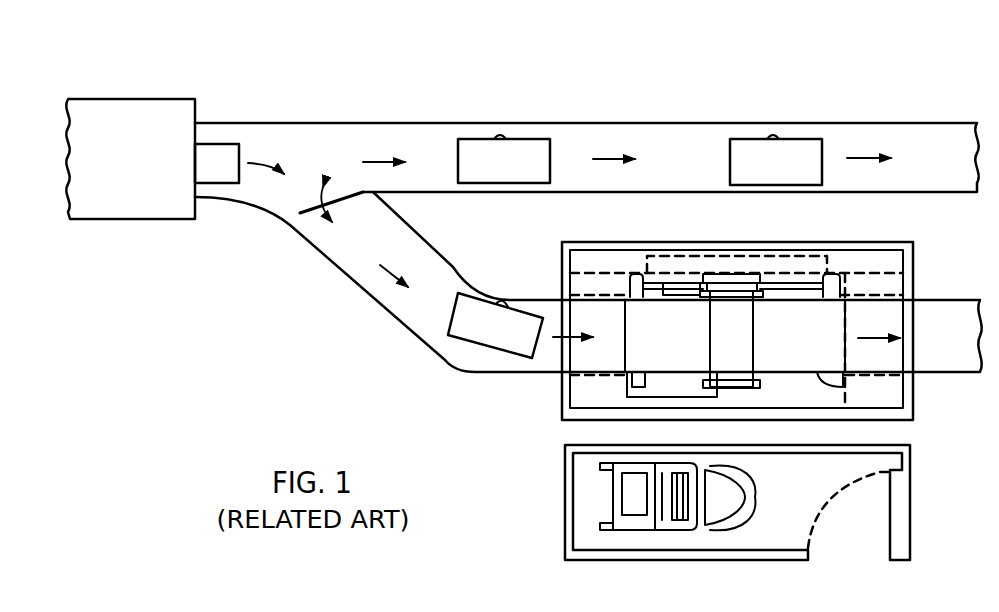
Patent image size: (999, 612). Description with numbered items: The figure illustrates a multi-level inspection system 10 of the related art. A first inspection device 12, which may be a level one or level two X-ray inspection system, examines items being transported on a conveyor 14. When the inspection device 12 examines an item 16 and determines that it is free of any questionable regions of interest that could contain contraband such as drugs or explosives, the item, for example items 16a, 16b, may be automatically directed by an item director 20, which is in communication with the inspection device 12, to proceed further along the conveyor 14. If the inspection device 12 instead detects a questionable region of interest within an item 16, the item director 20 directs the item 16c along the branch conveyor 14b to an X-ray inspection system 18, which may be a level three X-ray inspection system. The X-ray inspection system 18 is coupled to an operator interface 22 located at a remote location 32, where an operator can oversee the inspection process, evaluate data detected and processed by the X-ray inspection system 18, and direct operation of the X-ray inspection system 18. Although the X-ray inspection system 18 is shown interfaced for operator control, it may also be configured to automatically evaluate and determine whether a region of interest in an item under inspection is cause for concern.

The multi-level inspection system 10 is at (427, 82).
The first inspection device 12 is at (163, 219).
The conveyor 14 is at (236, 123).
The conveyor 14b is at (365, 290).
The item 16 is at (217, 177).
The item 16a is at (528, 139).
The item 16b is at (798, 139).
The item 16c is at (452, 328).
The X-ray inspection system 18 is at (545, 423).
The item director 20 is at (305, 238).
The operator interface 22 is at (607, 528).
The remote location 32 is at (552, 492).